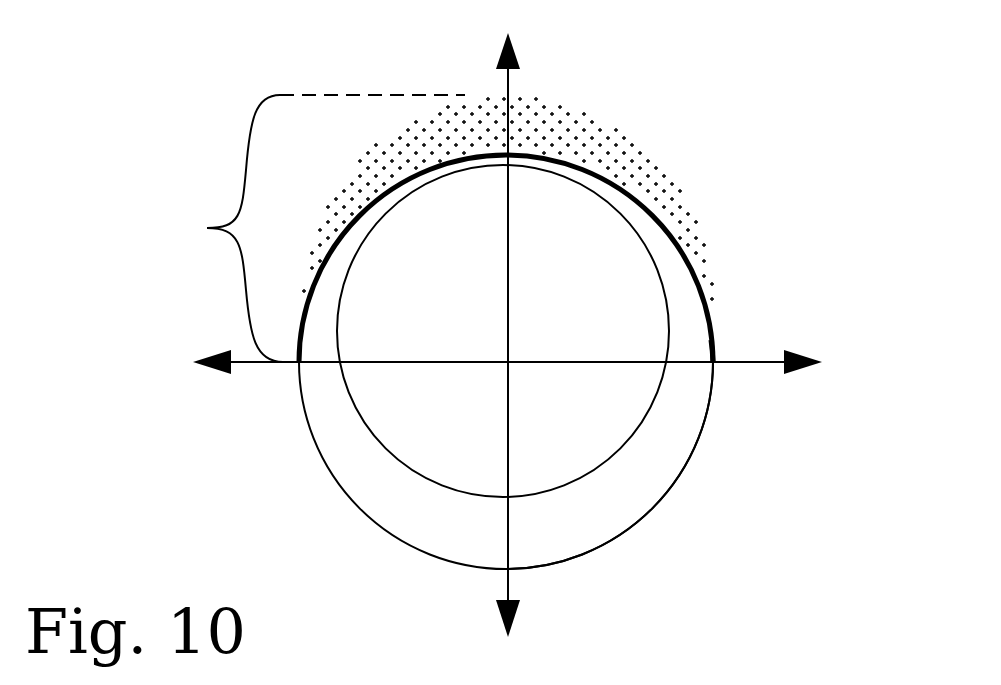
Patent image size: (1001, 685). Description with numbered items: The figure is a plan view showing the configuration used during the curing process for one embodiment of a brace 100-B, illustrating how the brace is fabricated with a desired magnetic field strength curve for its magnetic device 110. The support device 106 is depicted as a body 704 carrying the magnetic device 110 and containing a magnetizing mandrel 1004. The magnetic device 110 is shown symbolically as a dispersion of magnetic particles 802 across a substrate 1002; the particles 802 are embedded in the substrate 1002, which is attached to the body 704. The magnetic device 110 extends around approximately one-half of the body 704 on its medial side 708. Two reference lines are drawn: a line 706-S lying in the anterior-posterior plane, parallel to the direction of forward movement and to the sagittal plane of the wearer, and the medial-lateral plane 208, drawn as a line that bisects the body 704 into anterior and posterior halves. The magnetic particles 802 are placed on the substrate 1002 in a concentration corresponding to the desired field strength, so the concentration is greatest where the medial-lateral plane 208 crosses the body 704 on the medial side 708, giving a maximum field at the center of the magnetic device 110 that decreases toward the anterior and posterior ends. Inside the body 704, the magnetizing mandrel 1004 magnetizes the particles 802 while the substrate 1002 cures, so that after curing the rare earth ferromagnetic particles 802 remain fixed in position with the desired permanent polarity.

The brace 100-B is at (799, 104).
The support device 106 is at (333, 480).
The magnetic device 110 is at (208, 228).
The medial-lateral plane 208 is at (508, 585).
The body 704 is at (673, 480).
The line 706-S is at (252, 365).
The medial side 708 is at (288, 150).
The magnetic particles 802 is at (662, 203).
The substrate 1002 is at (714, 338).
The magnetizing mandrel 1004 is at (667, 377).